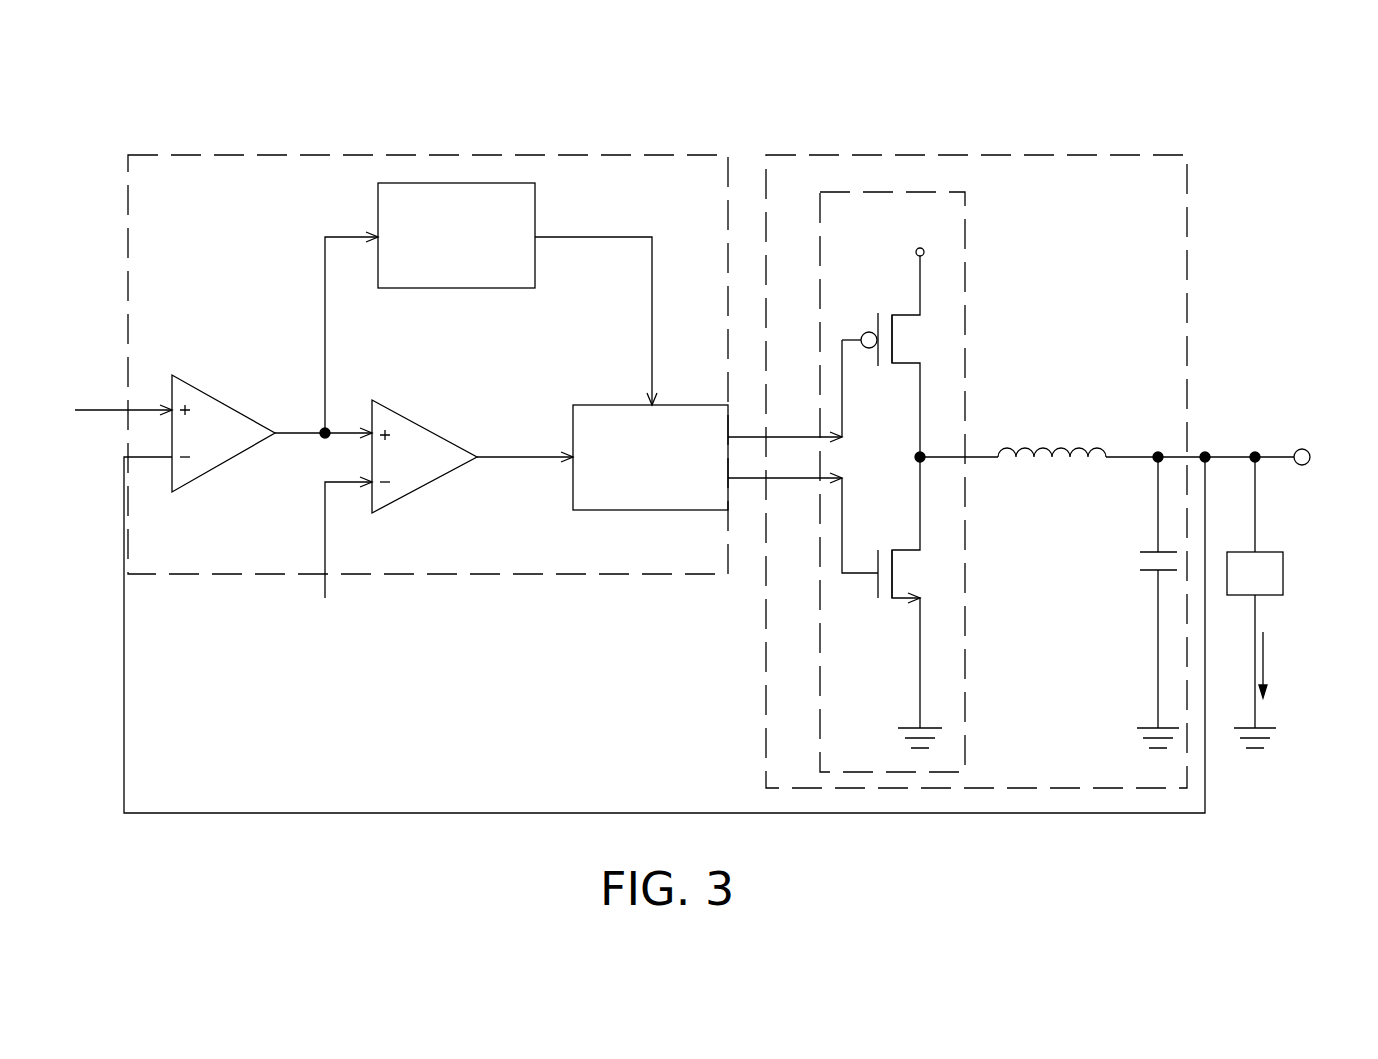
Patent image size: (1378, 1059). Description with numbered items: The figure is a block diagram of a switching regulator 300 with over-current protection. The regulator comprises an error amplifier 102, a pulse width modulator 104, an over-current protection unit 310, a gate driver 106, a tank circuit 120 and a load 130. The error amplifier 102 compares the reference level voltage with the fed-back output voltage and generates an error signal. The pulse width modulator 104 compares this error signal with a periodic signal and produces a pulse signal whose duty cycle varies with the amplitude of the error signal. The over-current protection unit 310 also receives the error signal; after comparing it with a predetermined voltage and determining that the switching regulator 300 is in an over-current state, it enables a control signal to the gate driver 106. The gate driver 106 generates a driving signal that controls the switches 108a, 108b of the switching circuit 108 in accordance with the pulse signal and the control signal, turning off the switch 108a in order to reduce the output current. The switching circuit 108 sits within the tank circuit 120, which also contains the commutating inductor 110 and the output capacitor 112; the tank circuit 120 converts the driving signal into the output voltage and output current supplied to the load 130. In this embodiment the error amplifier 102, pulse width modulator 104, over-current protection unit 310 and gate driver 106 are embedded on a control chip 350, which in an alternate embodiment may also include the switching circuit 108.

The switching regulator 300 is at (225, 118).
The control chip 350 is at (463, 155).
The error amplifier 102 is at (233, 408).
The pulse width modulator 104 is at (407, 435).
The gate driver 106 is at (697, 410).
The over-current protection unit 310 is at (460, 193).
The tank circuit 120 is at (993, 155).
The switching circuit 108 is at (838, 278).
The switch 108a is at (915, 338).
The switch 108b is at (915, 578).
The commutating inductor 110 is at (1075, 440).
The output capacitor 112 is at (1140, 563).
The load 130 is at (1283, 560).